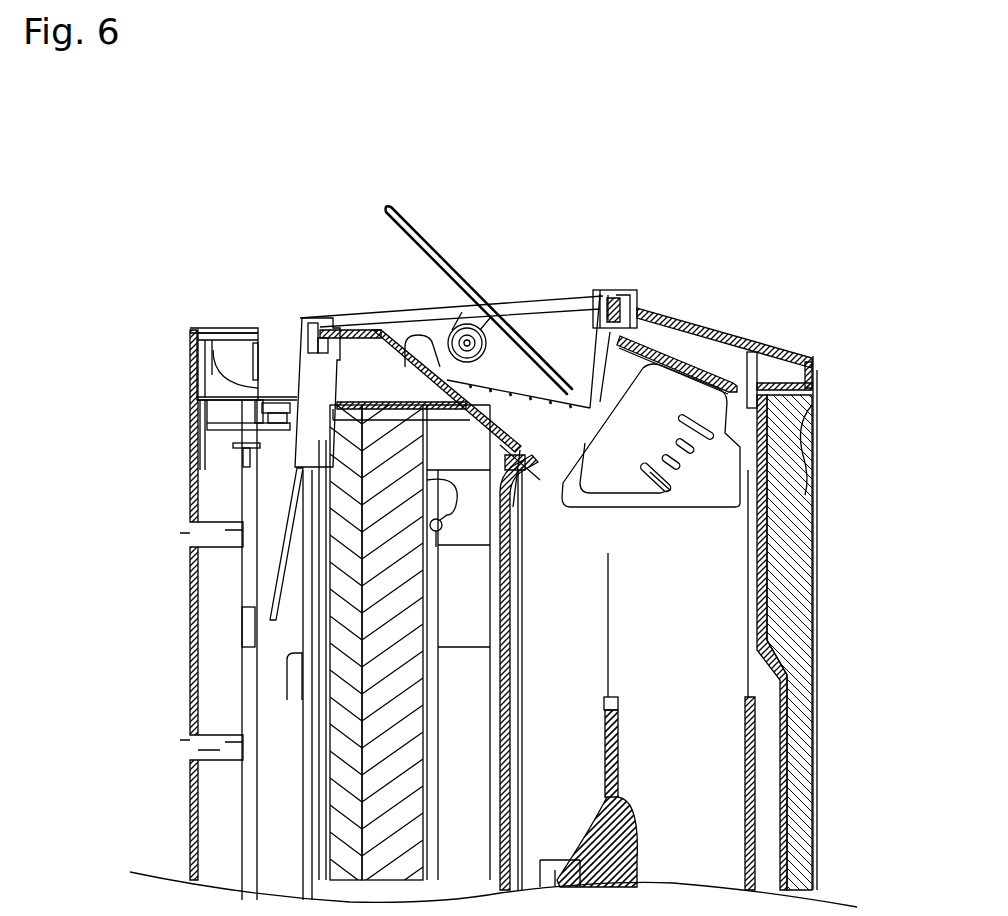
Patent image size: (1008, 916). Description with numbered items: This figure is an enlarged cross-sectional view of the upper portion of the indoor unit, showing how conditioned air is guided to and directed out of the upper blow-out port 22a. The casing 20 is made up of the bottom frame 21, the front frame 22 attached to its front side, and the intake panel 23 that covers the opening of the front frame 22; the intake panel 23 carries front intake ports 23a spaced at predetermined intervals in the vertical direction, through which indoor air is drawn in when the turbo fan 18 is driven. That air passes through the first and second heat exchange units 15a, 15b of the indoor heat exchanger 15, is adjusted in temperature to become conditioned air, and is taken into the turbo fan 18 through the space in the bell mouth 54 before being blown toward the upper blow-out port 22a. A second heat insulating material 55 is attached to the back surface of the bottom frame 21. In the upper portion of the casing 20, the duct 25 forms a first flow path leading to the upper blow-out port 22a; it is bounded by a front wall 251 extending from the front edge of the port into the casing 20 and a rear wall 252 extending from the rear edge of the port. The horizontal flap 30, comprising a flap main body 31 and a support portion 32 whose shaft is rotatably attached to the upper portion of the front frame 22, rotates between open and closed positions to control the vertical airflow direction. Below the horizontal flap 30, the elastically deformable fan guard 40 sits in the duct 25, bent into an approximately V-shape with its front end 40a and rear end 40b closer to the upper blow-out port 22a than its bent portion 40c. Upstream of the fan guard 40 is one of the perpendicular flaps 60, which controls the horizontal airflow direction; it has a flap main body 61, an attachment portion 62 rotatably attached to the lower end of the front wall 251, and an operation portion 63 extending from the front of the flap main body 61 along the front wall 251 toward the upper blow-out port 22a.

The indoor heat exchanger 15 is at (234, 641).
The first heat exchange unit 15a is at (347, 712).
The second heat exchange unit 15b is at (393, 788).
The turbo fan 18 is at (812, 870).
The casing 20 is at (754, 305).
The bottom frame 21 is at (777, 337).
The front frame 22 is at (300, 319).
The upper blow-out port 22a is at (423, 315).
The intake panel 23 is at (192, 615).
The front intake port 23a is at (197, 533).
The duct 25 is at (713, 368).
The front wall 251 is at (300, 375).
The rear wall 252 is at (703, 360).
The horizontal flap 30 is at (421, 231).
The flap main body 31 is at (462, 300).
The support portion 32 is at (451, 376).
The fan guard 40 is at (380, 327).
The front end 40a is at (337, 402).
The rear end 40b is at (623, 290).
The bent portion 40c is at (585, 400).
The bell mouth 54 is at (510, 832).
The second heat insulating material 55 is at (797, 578).
The perpendicular flap 60 is at (738, 470).
The flap main body 61 is at (712, 412).
The attachment portion 62 is at (290, 455).
The operation portion 63 is at (345, 322).